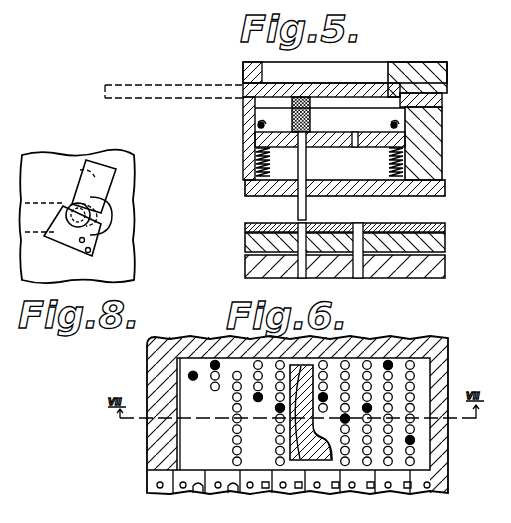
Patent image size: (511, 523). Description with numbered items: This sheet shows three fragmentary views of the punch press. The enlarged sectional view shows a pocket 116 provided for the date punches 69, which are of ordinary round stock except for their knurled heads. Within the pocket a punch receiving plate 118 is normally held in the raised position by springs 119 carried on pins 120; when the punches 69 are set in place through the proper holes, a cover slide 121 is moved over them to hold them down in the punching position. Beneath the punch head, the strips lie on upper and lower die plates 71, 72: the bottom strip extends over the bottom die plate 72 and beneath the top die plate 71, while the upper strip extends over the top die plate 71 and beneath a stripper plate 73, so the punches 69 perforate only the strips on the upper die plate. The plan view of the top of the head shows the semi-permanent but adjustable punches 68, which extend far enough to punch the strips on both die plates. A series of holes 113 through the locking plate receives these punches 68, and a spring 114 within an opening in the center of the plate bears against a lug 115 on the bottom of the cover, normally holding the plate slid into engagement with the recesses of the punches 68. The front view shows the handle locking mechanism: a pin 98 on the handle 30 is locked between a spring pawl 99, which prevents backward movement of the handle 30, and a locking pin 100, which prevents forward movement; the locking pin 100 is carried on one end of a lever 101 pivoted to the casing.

In FIG. 5, the cover slide 121 is at (362, 83).
In FIG. 5, the punch receiving plate 118 is at (329, 132).
In FIG. 5, the pins 120 is at (257, 129).
In FIG. 5, the springs 119 is at (255, 161).
In FIG. 5, the punches 69 is at (306, 158).
In FIG. 5, the pocket 116 is at (380, 163).
In FIG. 5, the stripper plate 73 is at (445, 228).
In FIG. 5, the upper die plate 71 is at (445, 242).
In FIG. 5, the lower die plate 72 is at (445, 266).
In FIG. 8, the pin 98 is at (80, 200).
In FIG. 8, the handle 30 is at (90, 207).
In FIG. 8, the locking pin 100 is at (96, 217).
In FIG. 8, the lever 101 is at (100, 233).
In FIG. 8, the spring pawl 99 is at (50, 240).
In FIG. 6, the punches 68 is at (215, 365).
In FIG. 6, the holes 113 is at (236, 452).
In FIG. 6, the spring 114 is at (297, 460).
In FIG. 6, the lug 115 is at (328, 452).